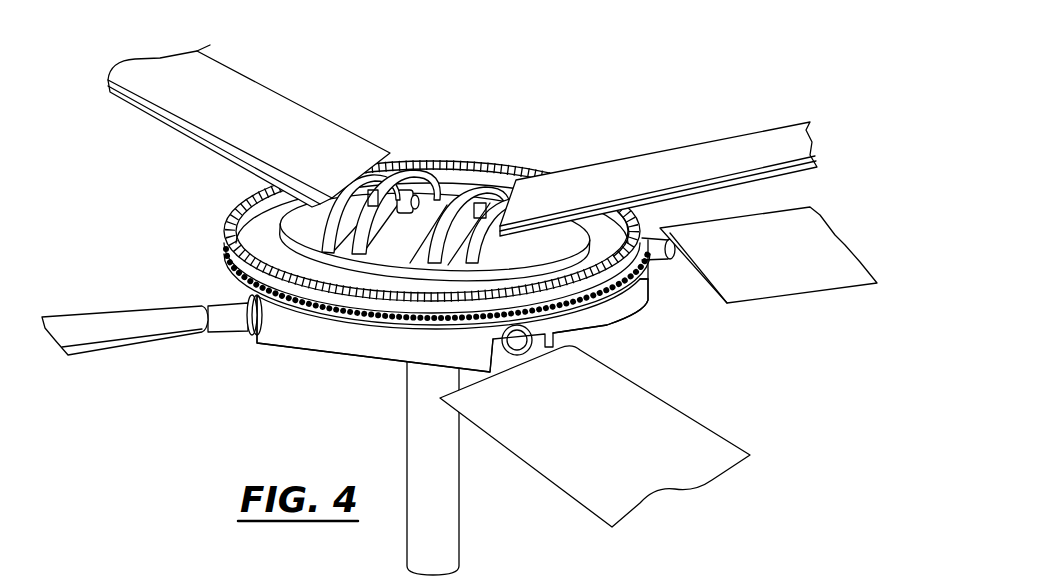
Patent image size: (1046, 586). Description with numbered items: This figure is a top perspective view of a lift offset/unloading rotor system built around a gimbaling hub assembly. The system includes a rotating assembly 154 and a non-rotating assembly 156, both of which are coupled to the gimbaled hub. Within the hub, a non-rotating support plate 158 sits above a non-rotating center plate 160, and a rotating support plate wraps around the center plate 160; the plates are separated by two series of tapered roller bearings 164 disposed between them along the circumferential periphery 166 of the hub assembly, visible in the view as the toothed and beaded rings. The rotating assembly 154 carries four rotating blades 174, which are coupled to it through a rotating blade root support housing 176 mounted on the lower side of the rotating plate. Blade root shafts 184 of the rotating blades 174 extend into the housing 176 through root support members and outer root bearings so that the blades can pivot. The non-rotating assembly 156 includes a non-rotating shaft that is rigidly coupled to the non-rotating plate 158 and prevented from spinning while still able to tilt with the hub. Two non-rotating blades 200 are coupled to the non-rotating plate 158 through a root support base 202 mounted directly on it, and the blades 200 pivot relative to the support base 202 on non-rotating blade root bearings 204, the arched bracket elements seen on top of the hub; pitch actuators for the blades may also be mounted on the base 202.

The rotating assembly 154 is at (620, 293).
The non-rotating assembly 156 is at (643, 221).
The non-rotating support plate 158 is at (560, 232).
The non-rotating center plate 160 is at (570, 295).
The tapered roller bearings 164 is at (628, 290).
The circumferential periphery 166 is at (514, 166).
The rotating blades 174 is at (218, 165).
The rotating blade root support housing 176 is at (290, 345).
The blade root shafts 184 is at (222, 302).
The non-rotating blades 200 is at (270, 90).
The root support base 202 is at (410, 190).
The non-rotating blade root bearings 204 is at (388, 168).